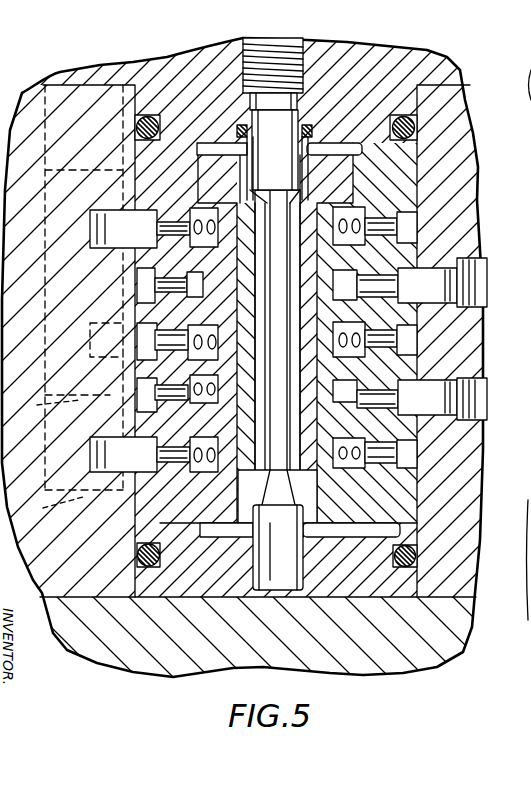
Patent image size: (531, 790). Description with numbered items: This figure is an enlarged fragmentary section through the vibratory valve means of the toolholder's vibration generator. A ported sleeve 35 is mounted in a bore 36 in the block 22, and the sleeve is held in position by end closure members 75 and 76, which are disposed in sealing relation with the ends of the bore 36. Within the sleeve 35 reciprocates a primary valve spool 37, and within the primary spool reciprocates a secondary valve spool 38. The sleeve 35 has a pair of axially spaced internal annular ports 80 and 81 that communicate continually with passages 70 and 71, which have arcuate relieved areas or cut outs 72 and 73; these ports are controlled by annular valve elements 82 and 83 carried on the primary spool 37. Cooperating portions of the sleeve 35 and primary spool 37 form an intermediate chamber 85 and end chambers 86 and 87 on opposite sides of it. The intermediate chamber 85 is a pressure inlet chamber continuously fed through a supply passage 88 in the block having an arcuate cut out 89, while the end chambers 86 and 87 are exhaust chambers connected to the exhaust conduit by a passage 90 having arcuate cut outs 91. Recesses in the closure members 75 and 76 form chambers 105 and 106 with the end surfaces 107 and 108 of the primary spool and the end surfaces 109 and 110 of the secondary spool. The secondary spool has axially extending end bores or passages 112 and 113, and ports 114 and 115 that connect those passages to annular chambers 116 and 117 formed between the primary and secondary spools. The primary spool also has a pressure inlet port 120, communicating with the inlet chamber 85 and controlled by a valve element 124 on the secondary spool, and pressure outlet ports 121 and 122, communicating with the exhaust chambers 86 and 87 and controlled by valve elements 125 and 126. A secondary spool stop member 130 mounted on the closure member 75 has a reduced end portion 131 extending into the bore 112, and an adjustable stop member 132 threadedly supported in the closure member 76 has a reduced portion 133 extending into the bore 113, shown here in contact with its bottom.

The block 22 is at (33, 110).
The end closure member 76 is at (397, 57).
The end surface of primary valve spool 108 is at (213, 143).
The end surface of secondary valve spool 110 is at (253, 187).
The adjustable stop member 132 is at (300, 120).
The chamber 106 is at (330, 143).
The axially extending end bore or passage 113 is at (307, 187).
The end chamber 86 is at (357, 173).
The arcuate cut outs 91 is at (93, 232).
The arcuate cut out 89 is at (63, 333).
The reduced portion 133 is at (272, 283).
The annular chamber 117 is at (240, 303).
The port 114 is at (268, 357).
The port 115 is at (320, 357).
The annular chamber 116 is at (187, 398).
The axially extending end bore or passage 112 is at (227, 420).
The secondary valve spool 38 is at (243, 460).
The bore 36 is at (133, 513).
The ported sleeve 35 is at (133, 537).
The primary valve spool 37 is at (213, 540).
The chamber 105 is at (247, 540).
The supply passage 88 is at (45, 407).
The passage 90 is at (50, 509).
The end surface of secondary valve spool 109 is at (310, 477).
The reduced end portion 131 is at (280, 495).
The end surface of primary valve spool 107 is at (325, 538).
The secondary spool stop member 130 is at (302, 572).
The end closure member 75 is at (415, 582).
The valve element 125 is at (338, 391).
The port 122 is at (333, 420).
The valve element 124 is at (340, 367).
The port 120 is at (343, 307).
The valve element 126 is at (373, 293).
The port 121 is at (340, 247).
The internal annular port 80 is at (417, 252).
The passage 70 is at (487, 270).
The annular valve element 82 is at (427, 285).
The arcuate relieved area or cut out 72 is at (485, 317).
The intermediate chamber 85 is at (417, 343).
The passage 71 is at (485, 387).
The annular valve element 83 is at (427, 397).
The arcuate relieved area or cut out 73 is at (477, 415).
The internal annular port 81 is at (417, 438).
The end chamber 87 is at (398, 453).